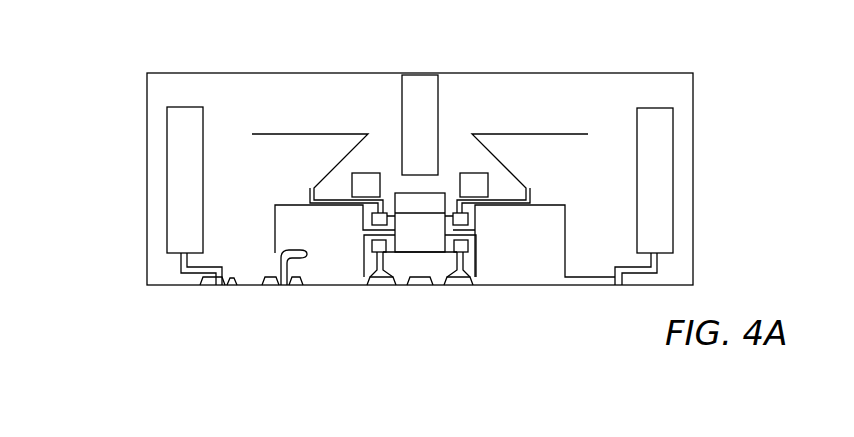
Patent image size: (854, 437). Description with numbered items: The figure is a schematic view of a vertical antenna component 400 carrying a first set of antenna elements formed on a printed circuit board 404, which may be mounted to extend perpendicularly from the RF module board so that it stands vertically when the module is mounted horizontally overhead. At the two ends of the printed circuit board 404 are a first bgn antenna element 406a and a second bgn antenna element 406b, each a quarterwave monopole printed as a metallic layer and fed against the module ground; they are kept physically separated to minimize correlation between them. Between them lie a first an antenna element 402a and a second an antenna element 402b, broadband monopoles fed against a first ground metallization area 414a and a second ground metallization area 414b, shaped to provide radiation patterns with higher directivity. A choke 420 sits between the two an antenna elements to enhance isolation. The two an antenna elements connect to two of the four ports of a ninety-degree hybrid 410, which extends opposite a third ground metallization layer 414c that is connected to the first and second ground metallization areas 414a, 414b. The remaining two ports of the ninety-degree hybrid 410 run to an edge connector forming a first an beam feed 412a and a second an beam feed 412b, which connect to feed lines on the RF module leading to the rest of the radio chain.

The vertical antenna component 400 is at (667, 55).
The first antenna element 802.11an 402a is at (313, 134).
The second antenna element 802.11an 402b is at (541, 134).
The printed circuit board 404 is at (672, 101).
The first 802.11bgn antenna element 406a is at (167, 242).
The second 802.11bgn antenna element 406b is at (673, 226).
The 90° hybrid 410 is at (417, 282).
The first 802.11an beam feed 412a is at (385, 292).
The second 802.11an beam feed 412b is at (450, 291).
The first ground metallization area 414a is at (323, 280).
The second ground metallization area 414b is at (517, 263).
The third ground metallization layer 414c is at (397, 282).
The choke 420 is at (413, 75).